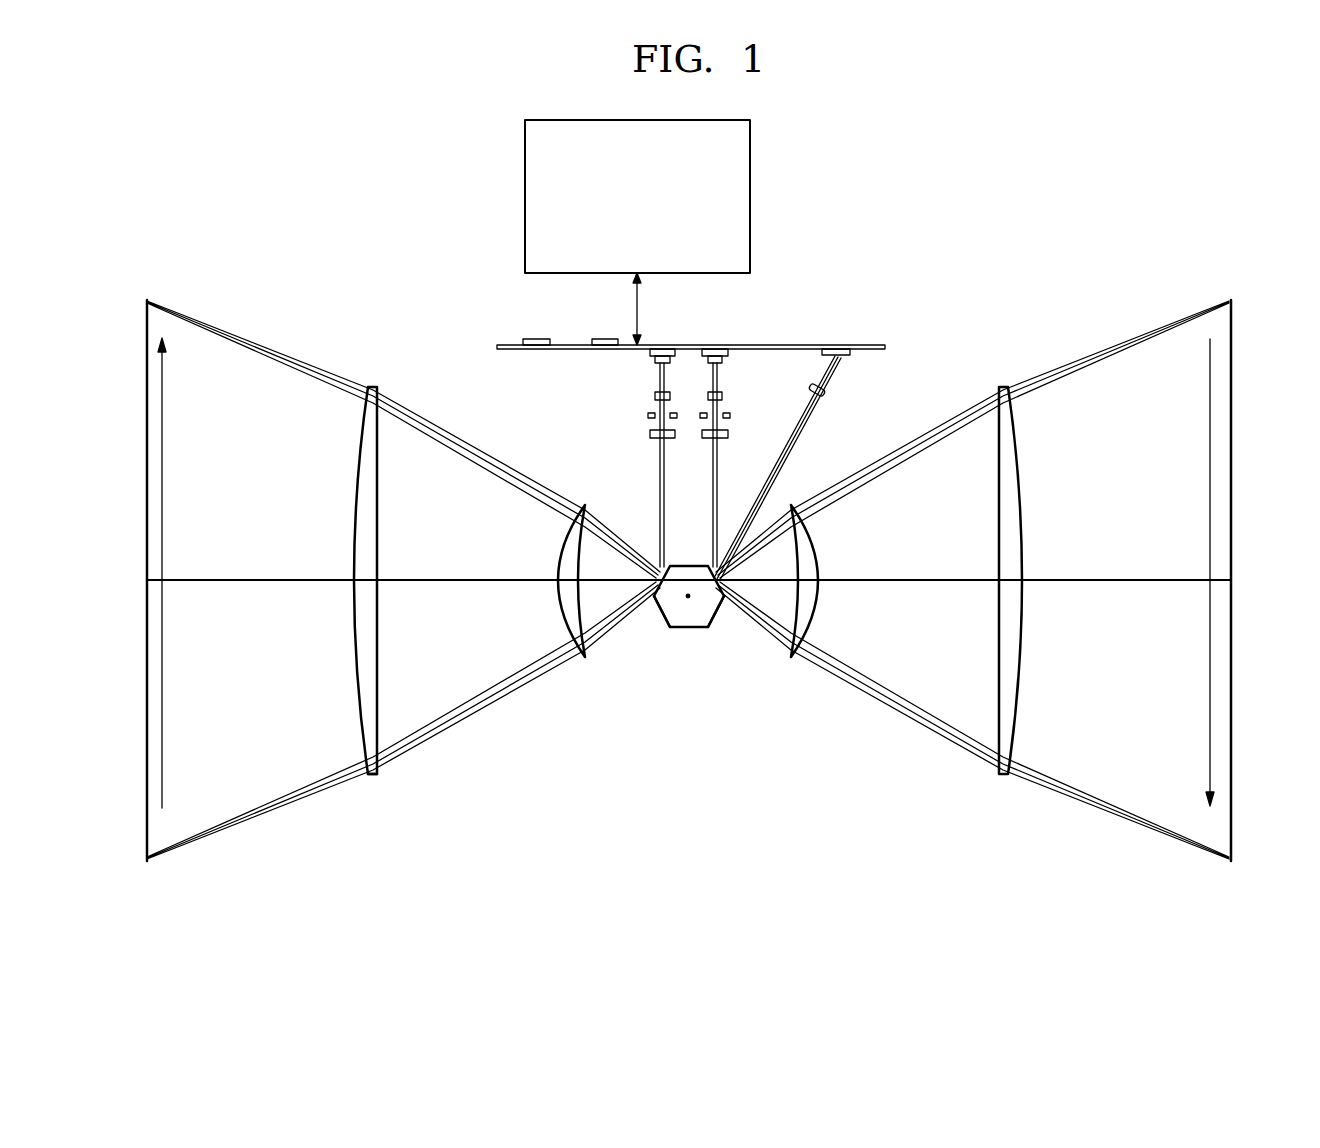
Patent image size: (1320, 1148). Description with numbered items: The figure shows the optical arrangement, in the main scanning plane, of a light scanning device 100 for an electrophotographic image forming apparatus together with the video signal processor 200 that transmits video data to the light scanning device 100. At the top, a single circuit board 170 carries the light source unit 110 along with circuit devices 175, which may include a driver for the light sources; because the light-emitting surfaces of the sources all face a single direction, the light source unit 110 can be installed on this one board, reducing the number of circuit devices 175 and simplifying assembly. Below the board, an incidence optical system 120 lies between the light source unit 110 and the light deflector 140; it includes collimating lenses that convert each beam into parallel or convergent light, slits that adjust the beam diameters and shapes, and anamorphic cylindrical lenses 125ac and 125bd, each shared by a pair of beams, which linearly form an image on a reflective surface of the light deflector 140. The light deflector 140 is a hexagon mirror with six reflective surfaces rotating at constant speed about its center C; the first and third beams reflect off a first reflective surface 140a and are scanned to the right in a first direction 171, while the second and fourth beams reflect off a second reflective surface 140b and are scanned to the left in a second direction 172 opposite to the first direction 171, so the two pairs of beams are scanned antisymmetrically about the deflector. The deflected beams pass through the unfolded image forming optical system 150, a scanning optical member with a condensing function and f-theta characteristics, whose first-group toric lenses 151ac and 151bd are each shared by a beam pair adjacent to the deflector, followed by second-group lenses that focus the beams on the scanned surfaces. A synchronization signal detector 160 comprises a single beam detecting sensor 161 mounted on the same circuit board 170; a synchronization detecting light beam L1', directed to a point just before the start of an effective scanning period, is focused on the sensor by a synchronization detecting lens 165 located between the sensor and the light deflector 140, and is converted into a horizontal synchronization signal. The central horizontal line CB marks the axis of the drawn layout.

The light scanning device 100 is at (1112, 224).
The video signal processor 200 is at (525, 204).
The circuit board 170 is at (497, 347).
The circuit devices 175 is at (537, 339).
The light source unit 110 is at (594, 435).
The incidence optical system 120 is at (661, 367).
The cylindrical lens 125ac is at (728, 434).
The cylindrical lens 125bd is at (650, 436).
The synchronization signal detector 160 is at (836, 440).
The beam detecting sensor 161 is at (850, 356).
The synchronization detecting lens 165 is at (825, 394).
The synchronization detecting light beam L1' is at (777, 468).
The central beam axis CB is at (424, 578).
The light deflector 140 is at (684, 633).
The first reflective surface 140a is at (723, 603).
The second reflective surface 140b is at (659, 603).
The center C is at (682, 609).
The image forming optical lens 151bd is at (568, 556).
The image forming optical lens 151ac is at (808, 558).
The image forming optical system 150 is at (383, 562).
The second direction 172 is at (165, 742).
The first direction 171 is at (1207, 715).